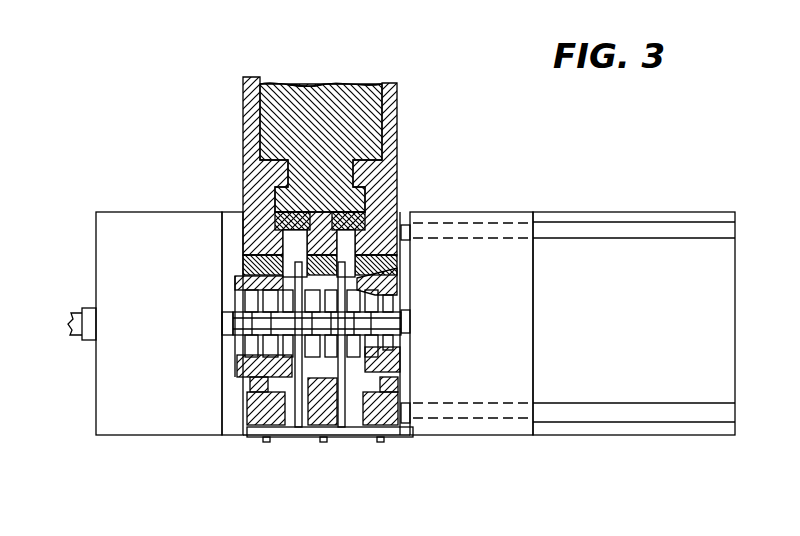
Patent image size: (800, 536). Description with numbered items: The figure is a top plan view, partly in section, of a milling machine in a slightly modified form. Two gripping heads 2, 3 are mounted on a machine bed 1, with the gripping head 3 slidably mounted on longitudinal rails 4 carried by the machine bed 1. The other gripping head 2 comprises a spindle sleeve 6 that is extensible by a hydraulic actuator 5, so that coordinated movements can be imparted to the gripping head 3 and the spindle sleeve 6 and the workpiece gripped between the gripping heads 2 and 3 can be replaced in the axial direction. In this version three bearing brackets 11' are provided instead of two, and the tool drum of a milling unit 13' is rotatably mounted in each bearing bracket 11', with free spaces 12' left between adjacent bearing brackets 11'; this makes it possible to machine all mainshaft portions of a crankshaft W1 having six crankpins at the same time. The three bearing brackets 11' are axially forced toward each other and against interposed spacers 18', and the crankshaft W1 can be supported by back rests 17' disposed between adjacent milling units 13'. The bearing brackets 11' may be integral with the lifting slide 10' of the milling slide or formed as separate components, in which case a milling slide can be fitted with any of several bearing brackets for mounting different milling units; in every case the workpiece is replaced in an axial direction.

The machine bed 1 is at (669, 272).
The gripping head 2 is at (167, 404).
The gripping head 3 is at (473, 250).
The longitudinal rails 4 is at (589, 232).
The hydraulic actuator 5 is at (76, 318).
The spindle sleeve 6 is at (224, 322).
The lifting slide 10' is at (265, 151).
The bearing brackets 11' is at (343, 351).
The free spaces 12' is at (264, 212).
The milling units 13' is at (315, 304).
The back rests 17' is at (336, 376).
The spacers 18' is at (330, 458).
The crankshaft W1 is at (403, 305).